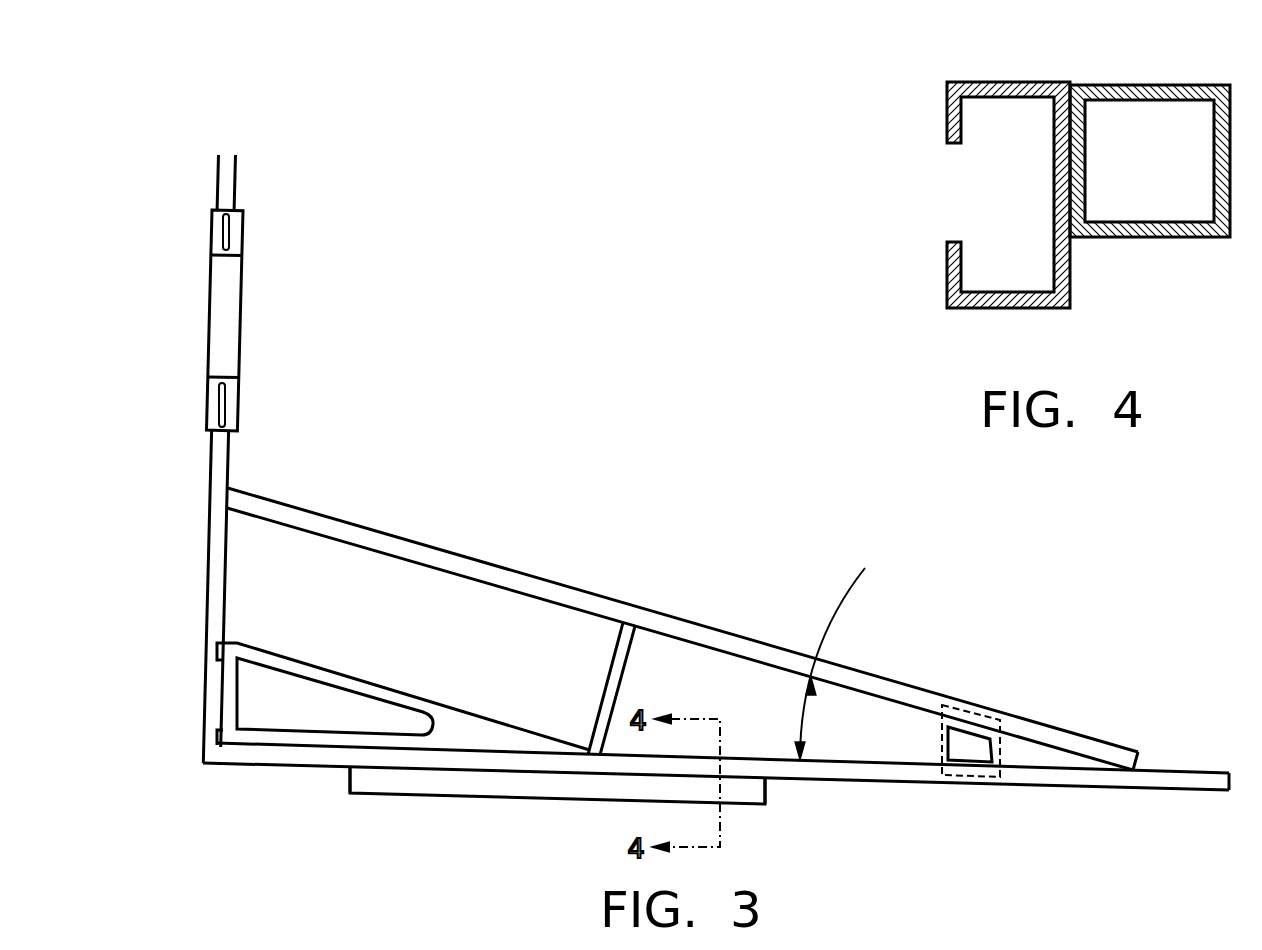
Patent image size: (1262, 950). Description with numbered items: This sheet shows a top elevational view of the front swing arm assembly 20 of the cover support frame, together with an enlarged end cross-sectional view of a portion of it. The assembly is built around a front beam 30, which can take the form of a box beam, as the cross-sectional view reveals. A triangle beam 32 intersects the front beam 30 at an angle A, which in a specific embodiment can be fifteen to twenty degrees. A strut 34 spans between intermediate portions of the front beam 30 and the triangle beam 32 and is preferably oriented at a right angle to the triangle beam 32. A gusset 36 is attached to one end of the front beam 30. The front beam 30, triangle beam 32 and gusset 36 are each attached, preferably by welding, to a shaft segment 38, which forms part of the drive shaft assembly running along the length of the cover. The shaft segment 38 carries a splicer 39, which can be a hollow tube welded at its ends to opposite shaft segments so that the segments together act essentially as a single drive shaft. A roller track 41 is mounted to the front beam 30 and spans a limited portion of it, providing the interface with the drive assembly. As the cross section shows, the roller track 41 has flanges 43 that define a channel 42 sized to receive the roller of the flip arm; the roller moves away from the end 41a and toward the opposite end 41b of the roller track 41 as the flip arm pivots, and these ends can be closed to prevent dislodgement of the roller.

In FIG. 3, the front swing arm assembly 20 is at (682, 610).
In FIG. 3, the front beam 30 is at (880, 780).
In FIG. 4, the front beam 30 is at (1148, 90).
In FIG. 3, the triangle beam 32 is at (758, 642).
In FIG. 3, the strut 34 is at (618, 667).
In FIG. 3, the gusset 36 is at (355, 687).
In FIG. 3, the shaft segment 38 is at (218, 552).
In FIG. 3, the splicer 39 is at (225, 302).
In FIG. 3, the roller track 41 is at (392, 780).
In FIG. 4, the roller track 41 is at (1013, 87).
In FIG. 3, the end of roller track 41a is at (767, 793).
In FIG. 3, the opposite end of roller track 41b is at (348, 778).
In FIG. 4, the channel 42 is at (987, 185).
In FIG. 4, the flanges 43 is at (957, 130).
In FIG. 3, the angle A is at (842, 647).